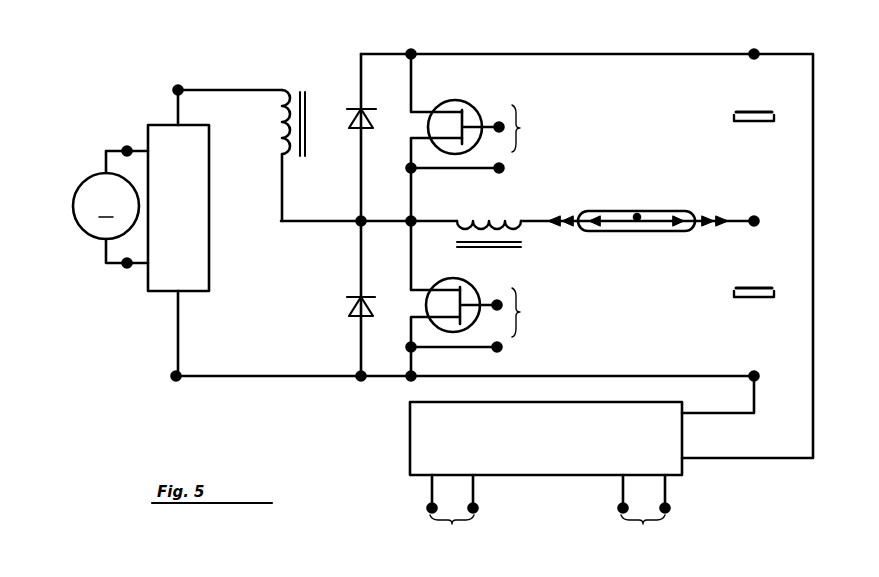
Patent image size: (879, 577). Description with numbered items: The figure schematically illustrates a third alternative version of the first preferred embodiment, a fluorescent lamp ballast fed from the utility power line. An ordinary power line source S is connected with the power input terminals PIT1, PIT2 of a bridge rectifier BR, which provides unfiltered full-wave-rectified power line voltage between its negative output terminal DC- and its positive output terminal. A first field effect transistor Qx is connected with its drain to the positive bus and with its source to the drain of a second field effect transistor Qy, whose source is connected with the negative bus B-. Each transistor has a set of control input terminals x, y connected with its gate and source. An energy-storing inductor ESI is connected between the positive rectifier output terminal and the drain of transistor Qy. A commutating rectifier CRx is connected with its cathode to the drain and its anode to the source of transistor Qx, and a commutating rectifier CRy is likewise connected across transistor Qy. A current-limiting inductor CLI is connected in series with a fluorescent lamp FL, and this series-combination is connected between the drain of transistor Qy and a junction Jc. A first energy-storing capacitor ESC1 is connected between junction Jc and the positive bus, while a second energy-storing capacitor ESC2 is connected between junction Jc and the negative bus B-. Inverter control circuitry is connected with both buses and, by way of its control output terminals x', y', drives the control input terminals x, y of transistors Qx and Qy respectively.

The source S is at (106, 206).
The power input terminal PIT1 is at (127, 147).
The power input terminal PIT2 is at (126, 268).
The bridge rectifier BR is at (160, 294).
The DC− terminal DC- is at (174, 378).
The energy-storing inductor ESI is at (307, 130).
The commutating rectifier CRx is at (372, 119).
The commutating rectifier CRy is at (349, 308).
The B− bus B- is at (288, 378).
The first field effect transistor Qx is at (469, 105).
The second field effect transistor Qy is at (478, 296).
The control input terminals x is at (473, 139).
The control input terminals y is at (473, 320).
The current-limiting inductor CLI is at (522, 247).
The fluorescent lamp FL is at (646, 211).
The junction Jc is at (757, 220).
The first energy-storing capacitor ESC1 is at (742, 123).
The second energy-storing capacitor ESC2 is at (742, 299).
The control output terminals x' is at (453, 513).
The control output terminals y' is at (644, 514).